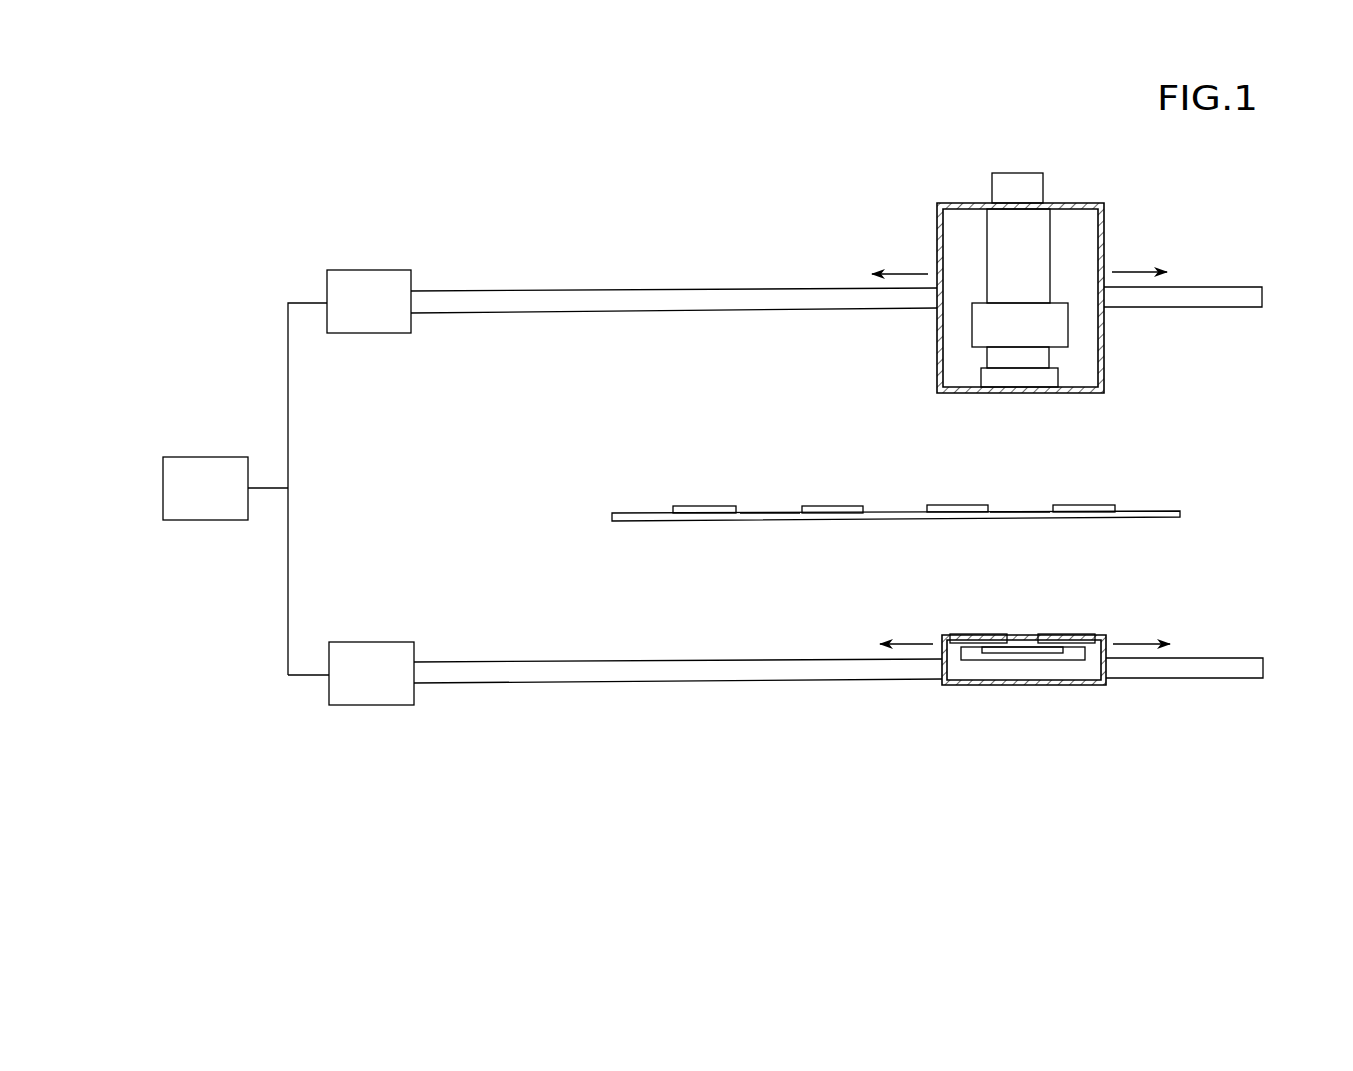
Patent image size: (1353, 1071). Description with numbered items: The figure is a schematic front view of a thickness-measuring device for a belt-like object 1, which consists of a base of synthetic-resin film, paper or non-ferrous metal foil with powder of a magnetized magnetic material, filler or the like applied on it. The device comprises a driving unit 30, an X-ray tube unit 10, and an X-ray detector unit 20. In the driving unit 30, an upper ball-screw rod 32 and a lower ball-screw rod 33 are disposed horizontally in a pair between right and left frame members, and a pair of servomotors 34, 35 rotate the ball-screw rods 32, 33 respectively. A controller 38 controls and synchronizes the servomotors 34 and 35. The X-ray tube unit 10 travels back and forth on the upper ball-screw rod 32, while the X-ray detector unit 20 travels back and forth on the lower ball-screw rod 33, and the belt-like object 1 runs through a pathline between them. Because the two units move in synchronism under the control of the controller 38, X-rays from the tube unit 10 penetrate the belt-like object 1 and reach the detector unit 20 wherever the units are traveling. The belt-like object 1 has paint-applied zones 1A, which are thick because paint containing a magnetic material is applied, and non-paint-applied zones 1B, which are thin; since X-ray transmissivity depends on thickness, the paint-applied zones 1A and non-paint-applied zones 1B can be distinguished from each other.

The belt-like object 1 is at (1182, 513).
The paint-applied zone 1A is at (1105, 437).
The non-paint-applied zone 1B is at (1008, 500).
The X-ray tube unit 10 is at (910, 220).
The X-ray detector unit 20 is at (922, 692).
The driving unit 30 is at (312, 243).
The upper ball-screw rod 32 is at (600, 302).
The lower ball-screw rod 33 is at (545, 685).
The servomotor 34 is at (381, 283).
The servomotor 35 is at (360, 696).
The controller 38 is at (197, 508).